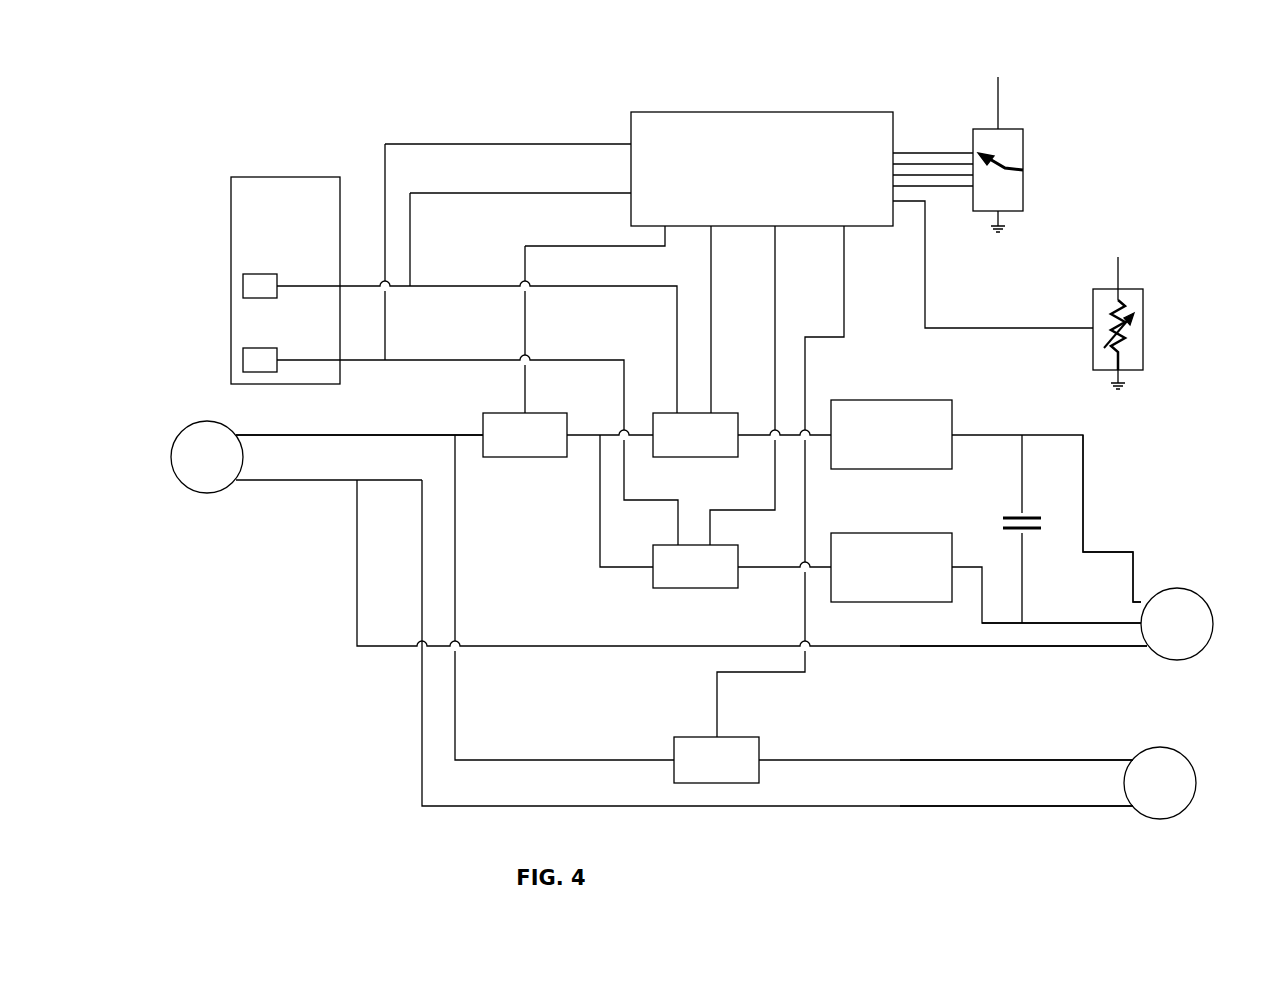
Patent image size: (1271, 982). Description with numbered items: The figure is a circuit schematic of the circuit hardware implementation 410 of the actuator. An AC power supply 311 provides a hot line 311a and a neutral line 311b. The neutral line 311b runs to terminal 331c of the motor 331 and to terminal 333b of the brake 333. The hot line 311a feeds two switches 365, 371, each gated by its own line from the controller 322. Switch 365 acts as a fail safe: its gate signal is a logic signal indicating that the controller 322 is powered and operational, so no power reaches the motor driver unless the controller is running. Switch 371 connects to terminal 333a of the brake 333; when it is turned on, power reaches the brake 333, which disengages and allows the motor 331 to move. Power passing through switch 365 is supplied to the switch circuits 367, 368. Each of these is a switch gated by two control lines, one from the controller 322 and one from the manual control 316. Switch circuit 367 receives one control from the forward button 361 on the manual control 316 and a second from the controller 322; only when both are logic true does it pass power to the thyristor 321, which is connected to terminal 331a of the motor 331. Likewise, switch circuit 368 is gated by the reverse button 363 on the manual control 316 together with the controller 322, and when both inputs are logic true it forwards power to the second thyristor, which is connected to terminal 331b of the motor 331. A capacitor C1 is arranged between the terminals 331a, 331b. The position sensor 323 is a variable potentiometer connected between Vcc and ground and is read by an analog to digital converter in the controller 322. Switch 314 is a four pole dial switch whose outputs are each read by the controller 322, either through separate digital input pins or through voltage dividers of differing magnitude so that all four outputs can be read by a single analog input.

The circuit hardware implementation 410 is at (212, 105).
The controller 322 is at (791, 357).
The switch 314 is at (1010, 133).
The position sensor 323 is at (1133, 363).
The manual control 316 is at (285, 280).
The forward button 361 is at (260, 287).
The reverse button 363 is at (265, 355).
The AC power supply 311 is at (207, 457).
The hot line 311a is at (359, 422).
The neutral line 311b is at (329, 493).
The switch 365 is at (525, 435).
The switch circuit 367 is at (695, 435).
The switch circuit 368 is at (695, 566).
The thyristor 321 is at (891, 434).
The switch 371 is at (716, 760).
The capacitor C1 is at (1005, 523).
The motor 331 is at (1177, 624).
The terminal 331a is at (1112, 518).
The terminal 331b is at (1061, 611).
The terminal 331c is at (1023, 659).
The brake 333 is at (1160, 783).
The terminal 333a is at (1016, 746).
The terminal 333b is at (1016, 818).